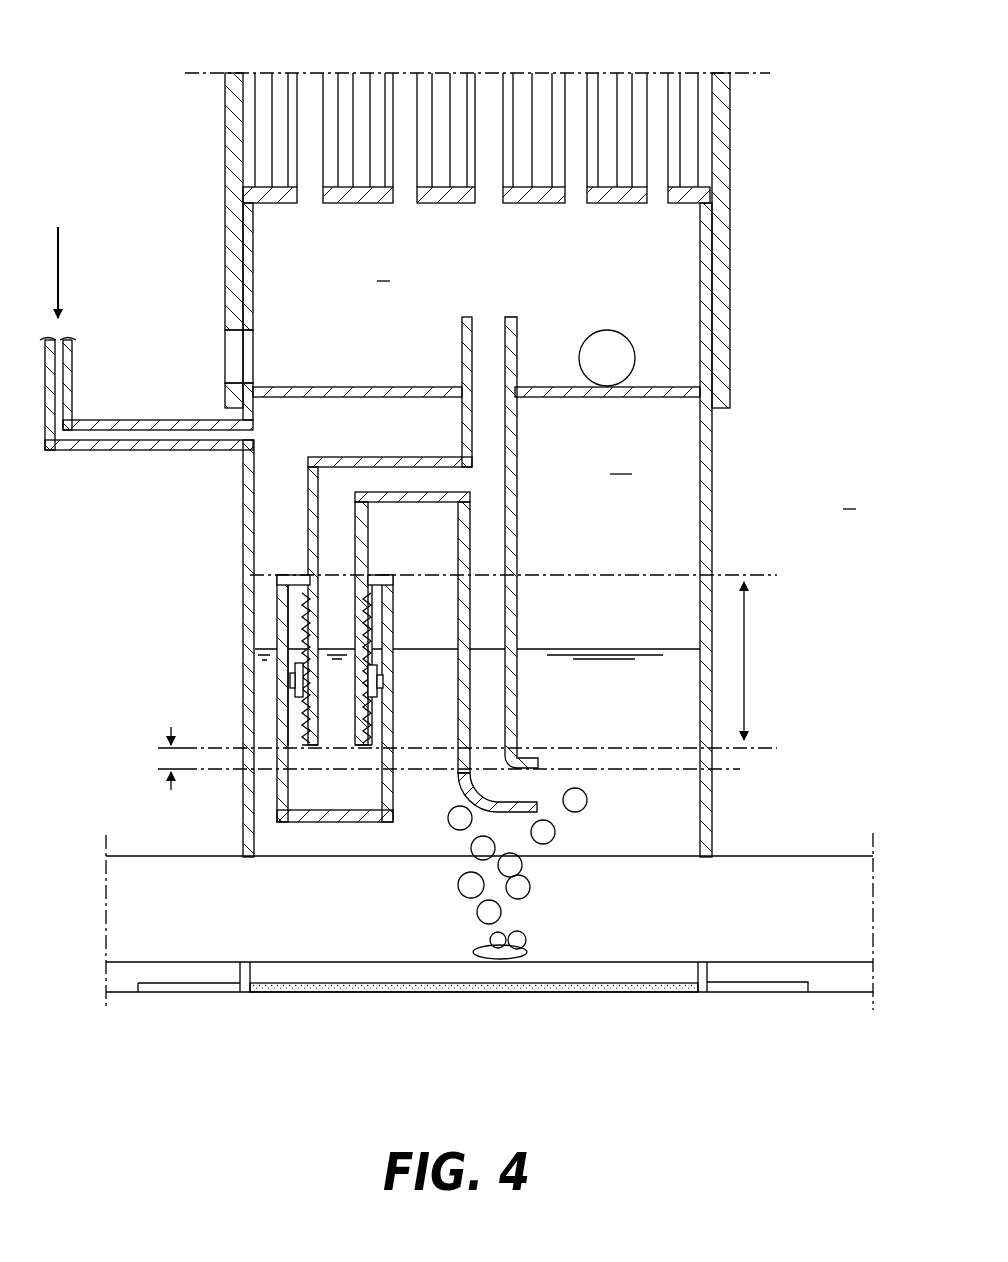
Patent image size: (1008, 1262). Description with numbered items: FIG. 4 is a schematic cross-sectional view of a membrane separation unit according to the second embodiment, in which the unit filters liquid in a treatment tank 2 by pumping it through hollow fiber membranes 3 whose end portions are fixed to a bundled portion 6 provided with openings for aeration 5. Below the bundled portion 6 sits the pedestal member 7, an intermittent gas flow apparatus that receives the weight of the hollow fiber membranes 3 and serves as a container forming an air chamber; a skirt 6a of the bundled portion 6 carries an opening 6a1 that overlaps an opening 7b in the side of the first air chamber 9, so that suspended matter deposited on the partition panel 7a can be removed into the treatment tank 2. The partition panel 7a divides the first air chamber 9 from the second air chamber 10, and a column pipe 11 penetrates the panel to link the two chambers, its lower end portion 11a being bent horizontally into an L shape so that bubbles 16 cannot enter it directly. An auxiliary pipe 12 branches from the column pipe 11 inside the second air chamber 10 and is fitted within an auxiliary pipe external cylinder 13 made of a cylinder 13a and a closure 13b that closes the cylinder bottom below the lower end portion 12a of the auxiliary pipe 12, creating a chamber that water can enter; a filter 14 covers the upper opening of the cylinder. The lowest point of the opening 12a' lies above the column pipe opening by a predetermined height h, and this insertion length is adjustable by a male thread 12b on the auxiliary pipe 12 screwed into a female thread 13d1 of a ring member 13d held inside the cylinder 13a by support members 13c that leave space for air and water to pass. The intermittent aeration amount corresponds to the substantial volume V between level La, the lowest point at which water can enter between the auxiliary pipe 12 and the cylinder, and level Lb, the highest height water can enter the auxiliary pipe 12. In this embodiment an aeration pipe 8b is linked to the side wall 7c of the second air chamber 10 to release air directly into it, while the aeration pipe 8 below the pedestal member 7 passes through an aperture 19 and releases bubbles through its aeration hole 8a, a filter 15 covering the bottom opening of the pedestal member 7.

The treatment tank 2 is at (849, 498).
The hollow fiber membranes 3 is at (547, 78).
The openings for aeration 5 is at (490, 80).
The bundled portion 6 is at (740, 161).
The skirt 6a is at (730, 328).
The opening 6a1 is at (232, 358).
The pedestal member 7 is at (712, 483).
The partition panel 7a is at (558, 397).
The opening 7b is at (253, 344).
The side wall 7c is at (240, 574).
The aeration pipe 8 is at (767, 948).
The aeration hole 8a is at (253, 435).
The aeration pipe 8b is at (118, 450).
The first air chamber 9 is at (383, 270).
The second air chamber 10 is at (622, 463).
The column pipe 11 is at (517, 705).
The lower end portion of the column pipe 11a is at (538, 763).
The auxiliary pipe 12 is at (300, 515).
The lower end portion of the auxiliary pipe 12a is at (282, 820).
The opening of the auxiliary pipe 12a' is at (313, 834).
The male thread 12b is at (305, 630).
The auxiliary pipe external cylinder 13 is at (268, 792).
The cylinder 13a is at (390, 597).
The closure 13b is at (372, 822).
The support member 13c is at (380, 678).
The ring member 13d is at (378, 666).
The female thread 13d1 is at (347, 707).
The filter 14 is at (297, 575).
The filter 15 is at (647, 992).
The bubbles 16 is at (578, 802).
The aperture 19 is at (713, 855).
The level La is at (529, 575).
The level Lb is at (496, 751).
The substantial volume V is at (759, 661).
The predetermined height h is at (160, 758).